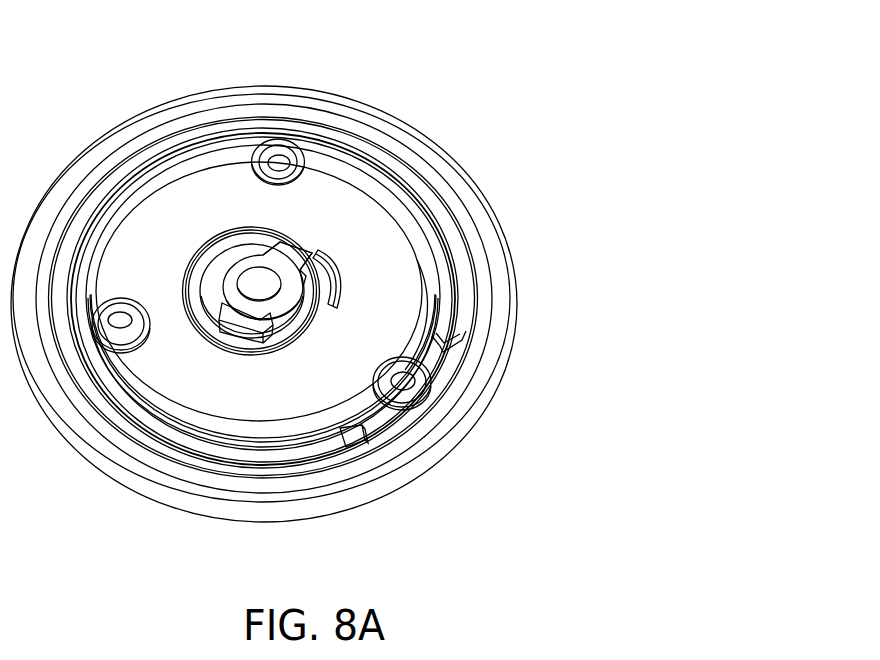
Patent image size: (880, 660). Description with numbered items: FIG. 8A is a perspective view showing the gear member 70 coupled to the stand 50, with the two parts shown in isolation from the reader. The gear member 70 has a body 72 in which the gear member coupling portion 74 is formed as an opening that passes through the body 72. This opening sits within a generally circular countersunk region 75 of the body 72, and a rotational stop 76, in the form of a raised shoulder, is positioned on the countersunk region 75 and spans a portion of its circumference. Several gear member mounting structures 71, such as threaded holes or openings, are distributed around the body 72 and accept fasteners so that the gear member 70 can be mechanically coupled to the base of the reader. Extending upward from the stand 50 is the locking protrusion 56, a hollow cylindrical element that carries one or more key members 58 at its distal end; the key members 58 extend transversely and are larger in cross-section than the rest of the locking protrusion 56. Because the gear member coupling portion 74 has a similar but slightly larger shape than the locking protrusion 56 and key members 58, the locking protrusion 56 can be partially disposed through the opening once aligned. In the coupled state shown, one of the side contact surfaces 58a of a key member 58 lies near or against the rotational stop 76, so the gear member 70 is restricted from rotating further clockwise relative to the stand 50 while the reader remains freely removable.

The stand 50 is at (493, 242).
The locking protrusion 56 is at (240, 280).
The key member 58 is at (280, 253).
The side contact surface 58a is at (340, 260).
The gear member 70 is at (383, 290).
The gear member mounting structure 71 is at (410, 385).
The body 72 is at (407, 307).
The gear member coupling portion 74 is at (280, 323).
The countersunk region 75 is at (292, 333).
The rotational stop 76 is at (337, 267).